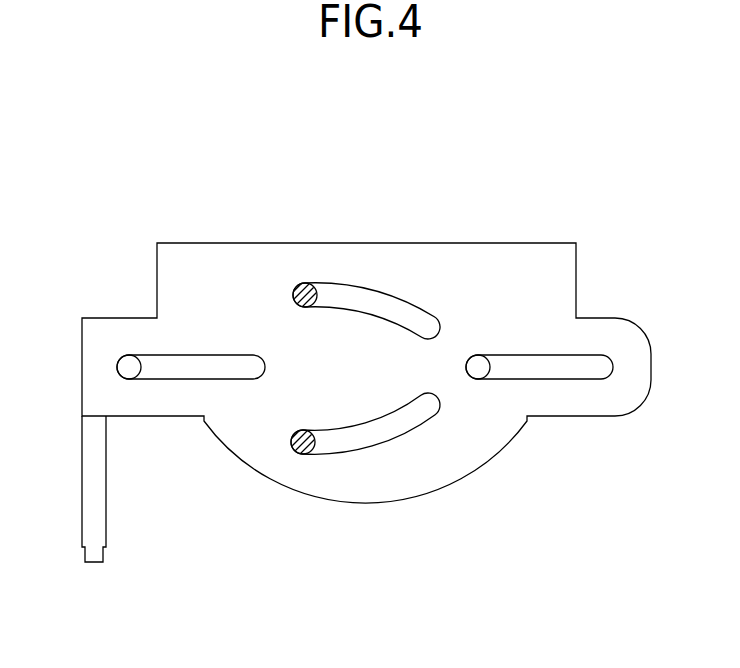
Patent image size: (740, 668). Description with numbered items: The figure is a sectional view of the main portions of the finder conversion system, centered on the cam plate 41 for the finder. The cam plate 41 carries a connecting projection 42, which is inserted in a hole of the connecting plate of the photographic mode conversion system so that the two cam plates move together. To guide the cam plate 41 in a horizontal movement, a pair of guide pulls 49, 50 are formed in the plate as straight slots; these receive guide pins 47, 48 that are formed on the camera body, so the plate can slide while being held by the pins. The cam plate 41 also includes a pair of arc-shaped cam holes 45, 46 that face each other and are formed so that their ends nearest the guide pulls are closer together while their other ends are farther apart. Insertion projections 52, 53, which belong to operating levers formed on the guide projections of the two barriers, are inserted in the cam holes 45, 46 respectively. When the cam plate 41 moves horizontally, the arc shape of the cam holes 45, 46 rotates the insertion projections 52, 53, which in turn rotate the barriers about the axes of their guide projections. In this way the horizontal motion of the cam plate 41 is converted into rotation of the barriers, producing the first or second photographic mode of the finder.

The cam plate for the finder 41 is at (203, 255).
The connecting projection 42 is at (92, 447).
The cam hole 45 is at (372, 300).
The cam hole 46 is at (390, 425).
The guide pin 47 is at (129, 356).
The guide pin 48 is at (478, 379).
The guide pull 49 is at (180, 368).
The guide pull 50 is at (575, 379).
The insertion projection 52 is at (300, 283).
The insertion projection 53 is at (303, 454).